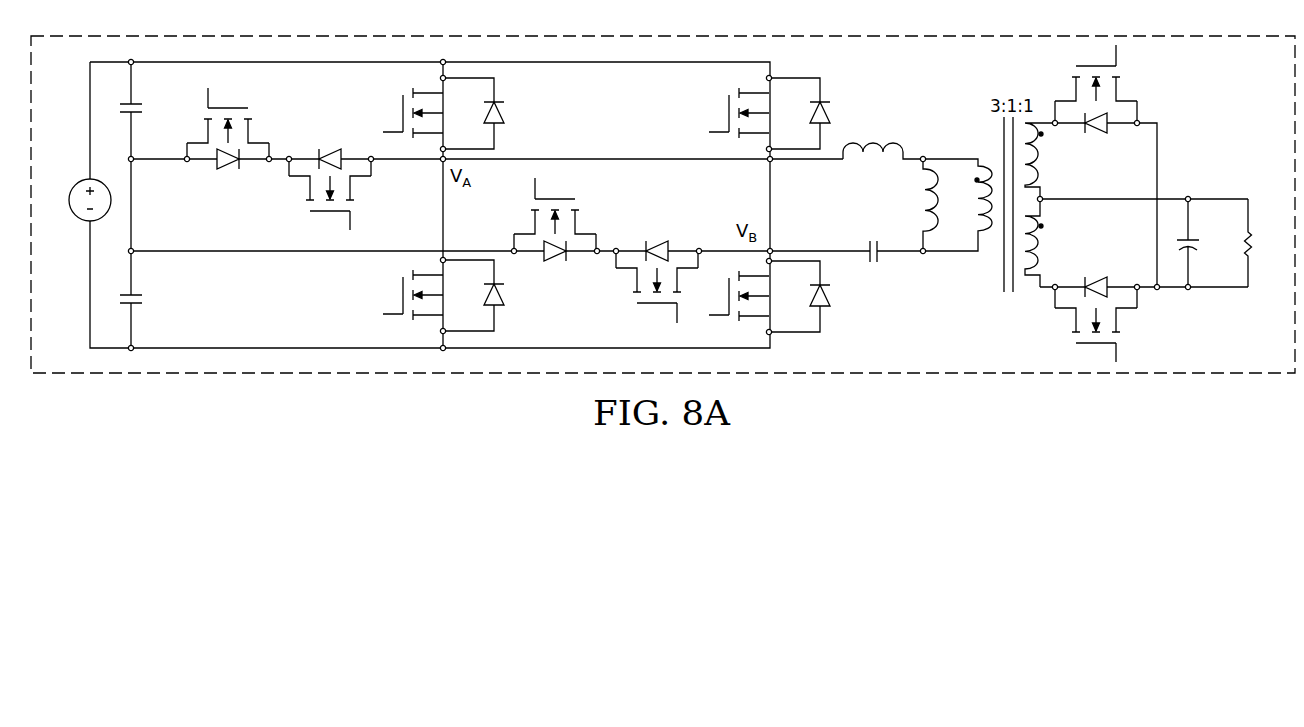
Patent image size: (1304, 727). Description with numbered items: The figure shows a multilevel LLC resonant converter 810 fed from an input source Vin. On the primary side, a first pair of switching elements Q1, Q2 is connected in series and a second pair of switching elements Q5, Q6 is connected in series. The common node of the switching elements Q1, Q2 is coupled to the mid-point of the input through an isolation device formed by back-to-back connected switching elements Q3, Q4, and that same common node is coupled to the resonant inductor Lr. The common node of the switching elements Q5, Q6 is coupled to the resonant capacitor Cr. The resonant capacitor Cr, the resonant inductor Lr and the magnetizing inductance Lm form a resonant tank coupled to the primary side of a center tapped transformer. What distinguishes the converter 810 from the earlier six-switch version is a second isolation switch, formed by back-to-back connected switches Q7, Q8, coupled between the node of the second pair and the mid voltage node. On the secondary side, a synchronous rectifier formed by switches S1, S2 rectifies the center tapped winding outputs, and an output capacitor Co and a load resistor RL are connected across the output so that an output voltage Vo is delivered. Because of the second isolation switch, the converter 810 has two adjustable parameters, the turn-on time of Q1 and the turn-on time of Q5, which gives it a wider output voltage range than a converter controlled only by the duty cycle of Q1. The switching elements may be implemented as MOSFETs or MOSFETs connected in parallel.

The multilevel LLC resonant converter 810 is at (1255, 75).
The input voltage source Vin is at (75, 200).
The switching element Q1 is at (443, 113).
The switching element Q2 is at (443, 295).
The switching element Q3 is at (228, 124).
The switching element Q4 is at (330, 196).
The switching element Q5 is at (769, 113).
The switching element Q6 is at (769, 296).
The switch Q7 is at (555, 216).
The switch Q8 is at (657, 288).
The resonant inductor Lr is at (883, 136).
The resonant capacitor Cr is at (892, 266).
The magnetizing inductance Lm is at (945, 205).
The switch S1 is at (1088, 89).
The switch S2 is at (1088, 319).
The output capacitor Co is at (1200, 243).
The load resistor RL is at (1261, 243).
The output voltage Vo is at (1246, 180).